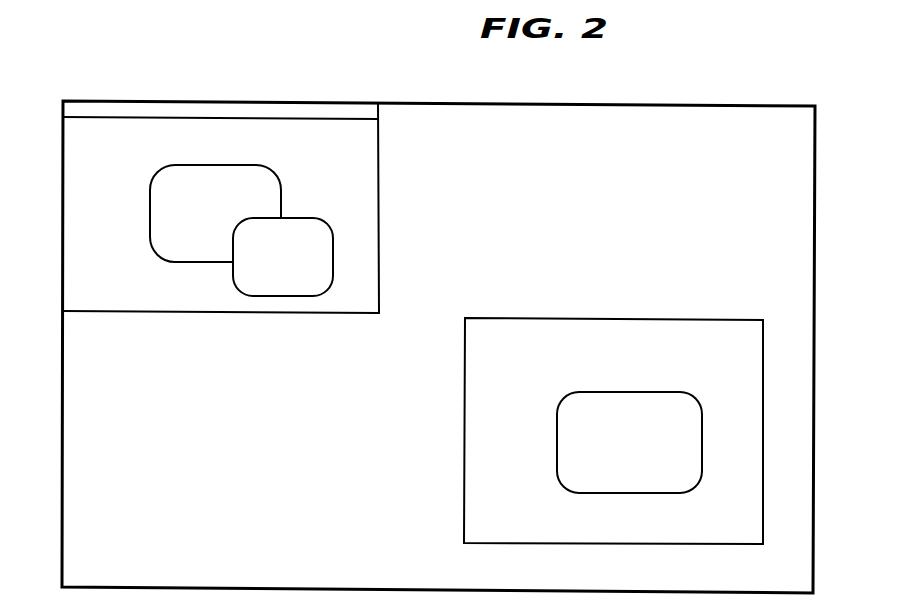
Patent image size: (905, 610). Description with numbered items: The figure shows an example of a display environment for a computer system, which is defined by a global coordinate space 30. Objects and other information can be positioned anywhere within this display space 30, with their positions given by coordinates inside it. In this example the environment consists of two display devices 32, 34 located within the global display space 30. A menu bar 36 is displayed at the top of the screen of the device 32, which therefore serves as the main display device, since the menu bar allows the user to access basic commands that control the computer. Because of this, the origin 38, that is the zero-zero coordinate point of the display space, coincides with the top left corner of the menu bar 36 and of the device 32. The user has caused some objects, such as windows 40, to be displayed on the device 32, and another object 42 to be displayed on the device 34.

The global coordinate space 30 is at (800, 182).
The display device 32 is at (380, 212).
The display device 34 is at (608, 318).
The menu bar 36 is at (285, 110).
The origin 38 is at (65, 96).
The windows 40 is at (260, 268).
The object 42 is at (557, 445).